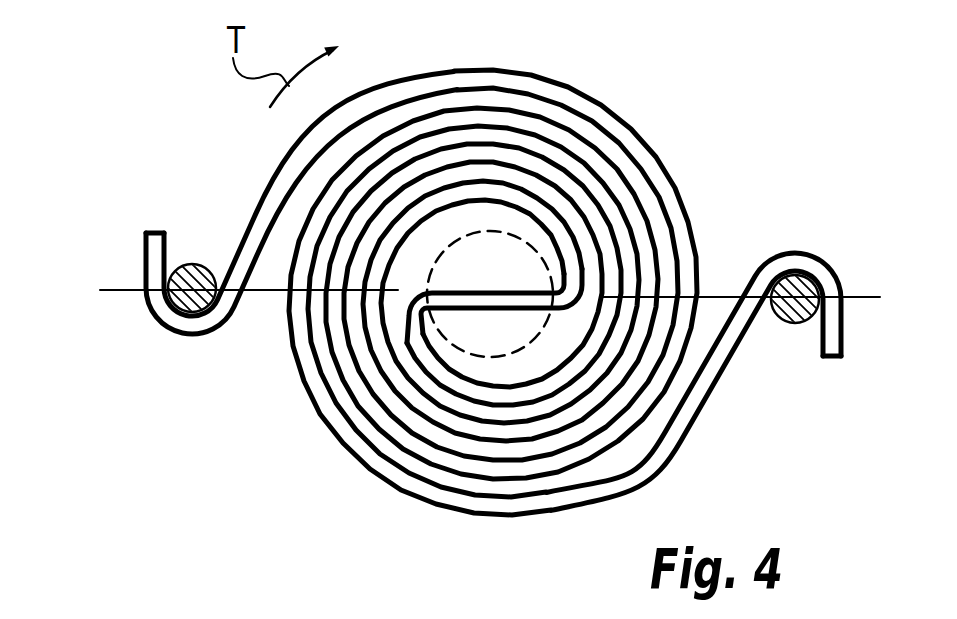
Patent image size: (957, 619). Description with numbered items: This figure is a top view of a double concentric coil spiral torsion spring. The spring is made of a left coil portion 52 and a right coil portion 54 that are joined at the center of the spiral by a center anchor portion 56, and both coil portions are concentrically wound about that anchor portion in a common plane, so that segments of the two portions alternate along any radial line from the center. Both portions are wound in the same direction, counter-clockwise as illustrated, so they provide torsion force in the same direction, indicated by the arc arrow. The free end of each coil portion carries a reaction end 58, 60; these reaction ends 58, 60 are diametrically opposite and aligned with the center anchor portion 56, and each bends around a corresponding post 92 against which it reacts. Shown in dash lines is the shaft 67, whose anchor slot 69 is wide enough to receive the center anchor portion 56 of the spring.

The left coil portion 52 is at (498, 267).
The right coil portion 54 is at (502, 193).
The center anchor portion 56 is at (472, 309).
The reaction end 58 is at (160, 307).
The reaction end 60 is at (838, 332).
The shaft 67 is at (517, 353).
The anchor slot 69 is at (521, 281).
The post 92 is at (203, 262).